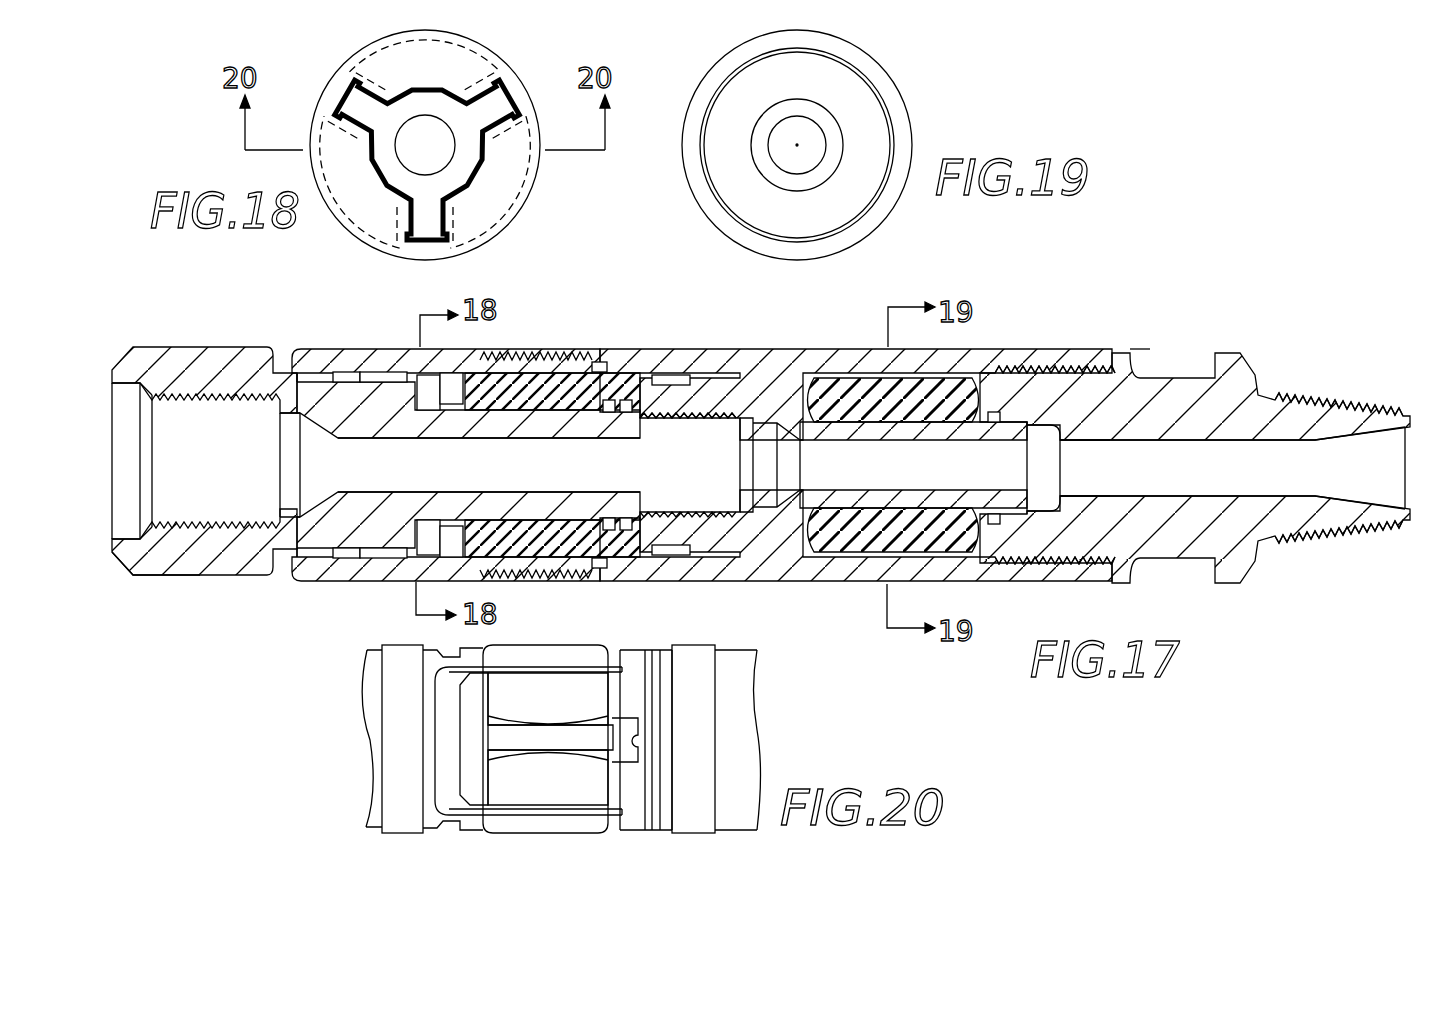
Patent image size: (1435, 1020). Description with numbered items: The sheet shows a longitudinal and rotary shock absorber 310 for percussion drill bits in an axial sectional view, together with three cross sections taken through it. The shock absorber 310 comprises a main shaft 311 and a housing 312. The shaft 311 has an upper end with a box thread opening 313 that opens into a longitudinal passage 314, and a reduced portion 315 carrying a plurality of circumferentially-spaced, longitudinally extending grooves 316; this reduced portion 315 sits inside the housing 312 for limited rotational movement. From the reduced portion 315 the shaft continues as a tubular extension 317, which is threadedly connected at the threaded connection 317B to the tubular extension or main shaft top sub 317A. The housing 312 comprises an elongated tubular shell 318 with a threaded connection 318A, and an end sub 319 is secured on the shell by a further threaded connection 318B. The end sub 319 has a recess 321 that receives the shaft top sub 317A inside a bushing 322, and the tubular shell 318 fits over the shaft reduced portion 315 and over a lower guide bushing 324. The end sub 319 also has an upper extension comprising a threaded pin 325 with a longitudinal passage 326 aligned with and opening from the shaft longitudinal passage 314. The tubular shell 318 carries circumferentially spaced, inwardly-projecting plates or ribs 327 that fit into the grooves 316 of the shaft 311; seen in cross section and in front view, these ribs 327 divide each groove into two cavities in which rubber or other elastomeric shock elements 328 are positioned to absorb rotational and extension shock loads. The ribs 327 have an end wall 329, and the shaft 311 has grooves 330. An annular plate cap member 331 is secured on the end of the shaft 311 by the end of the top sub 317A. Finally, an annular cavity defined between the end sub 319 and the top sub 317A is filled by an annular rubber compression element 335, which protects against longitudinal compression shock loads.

In FIG. 17, the shock absorber 310 is at (1125, 305).
In FIG. 17, the main shaft 311 is at (196, 585).
In FIG. 17, the housing 312 is at (228, 347).
In FIG. 17, the box thread opening 313 is at (180, 407).
In FIG. 17, the longitudinal passage 314 is at (413, 476).
In FIG. 17, the reduced portion 315 is at (430, 427).
In FIG. 17, the grooves 316 is at (406, 580).
In FIG. 18, the grooves 316 is at (407, 223).
In FIG. 17, the tubular extension 317 is at (592, 430).
In FIG. 17, the top sub 317A is at (836, 437).
In FIG. 19, the top sub 317A is at (827, 165).
In FIG. 17, the threaded connection 317B is at (708, 420).
In FIG. 17, the tubular shell 318 is at (696, 351).
In FIG. 19, the tubular shell 318 is at (862, 62).
In FIG. 17, the threaded connection 318A is at (568, 350).
In FIG. 17, the threaded connection 318B is at (1060, 368).
In FIG. 17, the end sub 319 is at (1178, 380).
In FIG. 17, the recess 321 is at (1062, 440).
In FIG. 17, the bushing 322 is at (1005, 425).
In FIG. 17, the lower guide bushing 324 is at (388, 372).
In FIG. 17, the threaded pin 325 is at (1322, 400).
In FIG. 17, the longitudinal passage 326 is at (1272, 477).
In FIG. 17, the ribs 327 is at (455, 535).
In FIG. 18, the ribs 327 is at (361, 110).
In FIG. 20, the ribs 327 is at (475, 742).
In FIG. 17, the shock elements 328 is at (526, 358).
In FIG. 18, the shock elements 328 is at (500, 155).
In FIG. 20, the end wall 329 is at (470, 698).
In FIG. 20, the grooves 330 is at (640, 748).
In FIG. 20, the annular plate cap member 331 is at (628, 822).
In FIG. 17, the annular rubber compression element 335 is at (872, 388).
In FIG. 19, the annular rubber compression element 335 is at (740, 88).